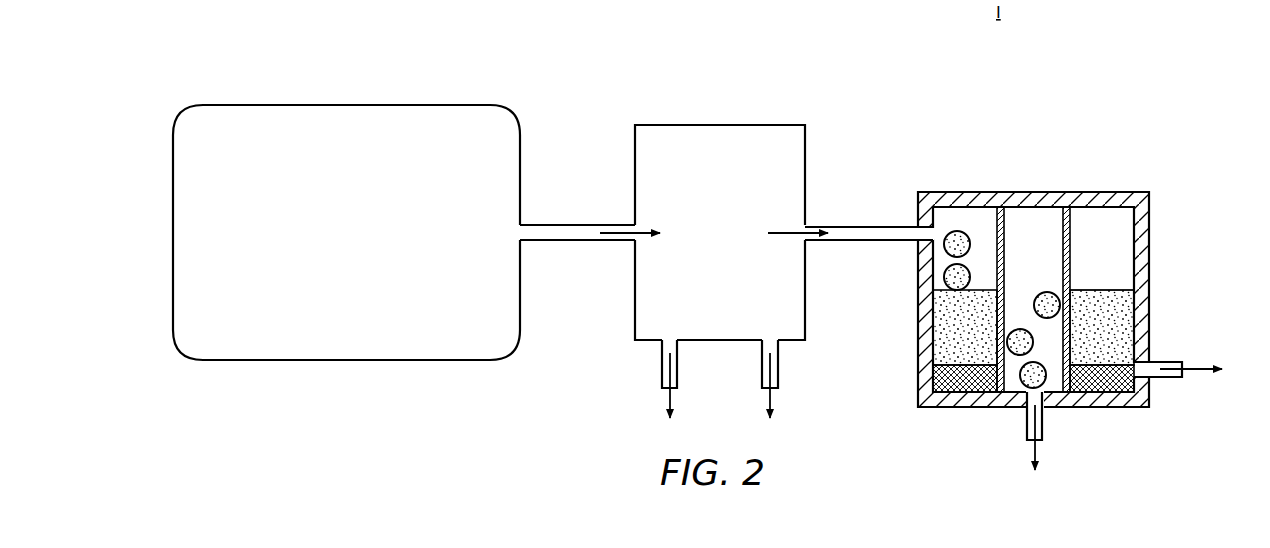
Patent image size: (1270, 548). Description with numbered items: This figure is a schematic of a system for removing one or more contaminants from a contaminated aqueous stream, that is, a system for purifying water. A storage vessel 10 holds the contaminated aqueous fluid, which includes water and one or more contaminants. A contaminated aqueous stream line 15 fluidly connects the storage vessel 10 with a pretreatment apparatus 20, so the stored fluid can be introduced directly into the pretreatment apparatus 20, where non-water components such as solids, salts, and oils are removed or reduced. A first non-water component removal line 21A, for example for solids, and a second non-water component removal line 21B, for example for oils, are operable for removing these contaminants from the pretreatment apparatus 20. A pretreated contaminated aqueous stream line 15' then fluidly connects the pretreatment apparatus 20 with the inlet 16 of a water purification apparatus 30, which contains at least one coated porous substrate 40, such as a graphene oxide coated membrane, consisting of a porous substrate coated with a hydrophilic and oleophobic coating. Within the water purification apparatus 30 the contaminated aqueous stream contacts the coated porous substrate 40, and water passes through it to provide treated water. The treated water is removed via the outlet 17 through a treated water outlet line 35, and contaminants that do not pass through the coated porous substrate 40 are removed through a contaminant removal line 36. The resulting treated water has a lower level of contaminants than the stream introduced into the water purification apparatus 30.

The storage vessel 10 is at (361, 239).
The contaminated aqueous stream line 15 is at (590, 251).
The pretreated contaminated aqueous stream line 15' is at (850, 252).
The inlet 16 is at (930, 234).
The outlet 17 is at (1044, 410).
The pretreatment apparatus 20 is at (731, 246).
The first non-water component removal line 21A is at (662, 372).
The second non-water component removal line 21B is at (778, 372).
The water purification apparatus 30 is at (1091, 176).
The treated water outlet line 35 is at (1032, 452).
The contaminant removal line 36 is at (1195, 372).
The coated porous substrate 40 is at (1072, 253).